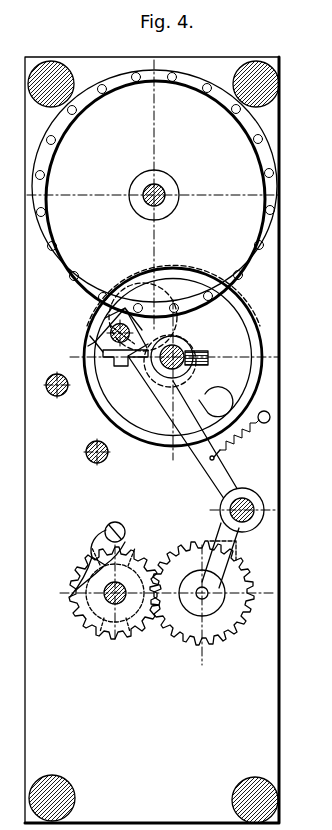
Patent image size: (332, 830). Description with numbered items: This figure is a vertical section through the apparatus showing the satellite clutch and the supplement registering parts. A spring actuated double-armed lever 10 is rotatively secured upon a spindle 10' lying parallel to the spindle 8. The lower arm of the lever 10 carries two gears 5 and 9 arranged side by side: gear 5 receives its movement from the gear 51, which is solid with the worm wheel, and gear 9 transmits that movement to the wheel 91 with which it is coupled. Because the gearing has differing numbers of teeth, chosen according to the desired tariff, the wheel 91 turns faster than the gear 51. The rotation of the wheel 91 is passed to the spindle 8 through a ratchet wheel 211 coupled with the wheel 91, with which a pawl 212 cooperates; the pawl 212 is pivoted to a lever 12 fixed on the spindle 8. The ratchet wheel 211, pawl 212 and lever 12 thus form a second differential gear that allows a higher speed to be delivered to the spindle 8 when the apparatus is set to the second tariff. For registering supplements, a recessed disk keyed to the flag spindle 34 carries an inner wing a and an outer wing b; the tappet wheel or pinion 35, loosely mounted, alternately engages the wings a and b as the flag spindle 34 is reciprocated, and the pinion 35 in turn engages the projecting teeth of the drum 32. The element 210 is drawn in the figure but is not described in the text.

The drum 32 is at (226, 274).
The inner flange or wing a is at (155, 333).
The flag spindle 34 is at (188, 350).
The detent 210 is at (207, 363).
The outer flange or wing b is at (86, 337).
The tappet wheel or pinion 35 is at (120, 360).
The spring actuated double-armed lever 10 is at (200, 421).
The spindle 10' is at (269, 510).
The gear 5 is at (242, 590).
The gear 9 is at (237, 623).
The wheel 91 is at (80, 583).
The spindle 8 is at (102, 612).
The gear 51 is at (120, 637).
The pawl 212 is at (105, 535).
The lever 12 is at (122, 540).
The ratchet wheel 211 is at (93, 562).